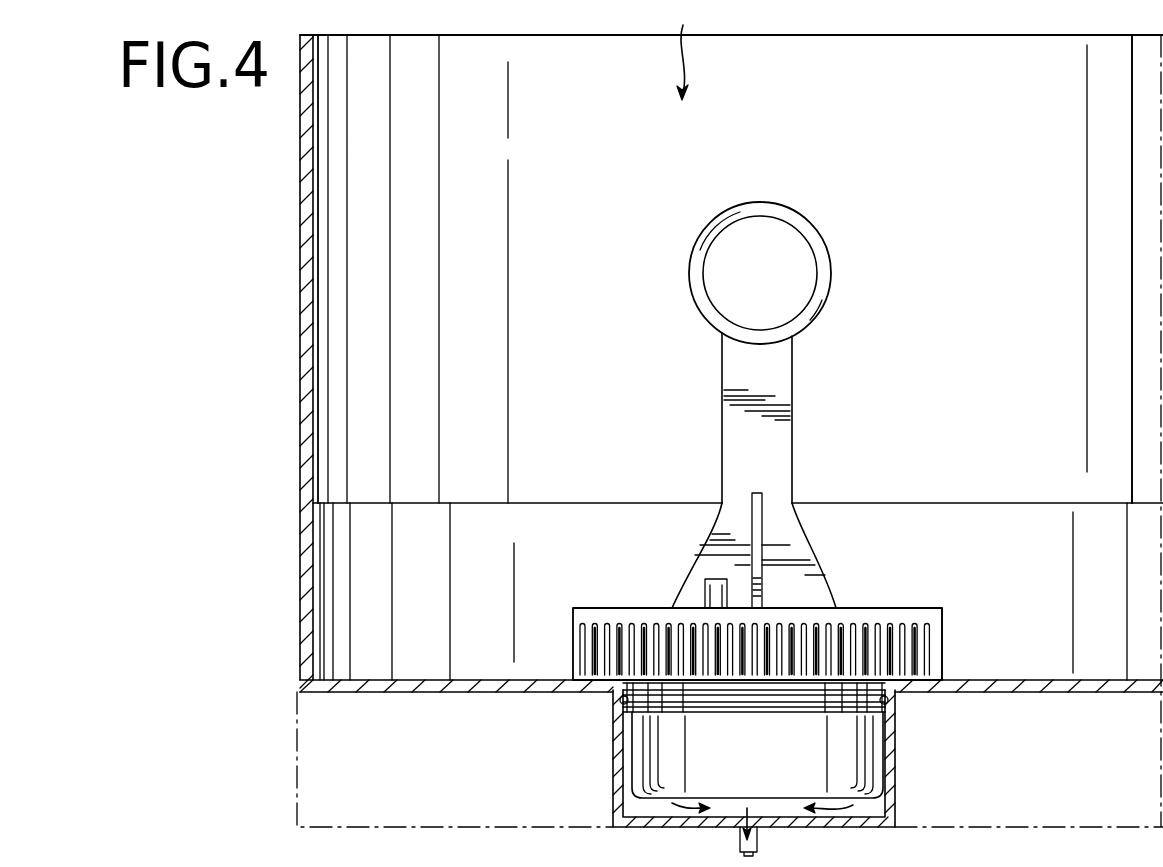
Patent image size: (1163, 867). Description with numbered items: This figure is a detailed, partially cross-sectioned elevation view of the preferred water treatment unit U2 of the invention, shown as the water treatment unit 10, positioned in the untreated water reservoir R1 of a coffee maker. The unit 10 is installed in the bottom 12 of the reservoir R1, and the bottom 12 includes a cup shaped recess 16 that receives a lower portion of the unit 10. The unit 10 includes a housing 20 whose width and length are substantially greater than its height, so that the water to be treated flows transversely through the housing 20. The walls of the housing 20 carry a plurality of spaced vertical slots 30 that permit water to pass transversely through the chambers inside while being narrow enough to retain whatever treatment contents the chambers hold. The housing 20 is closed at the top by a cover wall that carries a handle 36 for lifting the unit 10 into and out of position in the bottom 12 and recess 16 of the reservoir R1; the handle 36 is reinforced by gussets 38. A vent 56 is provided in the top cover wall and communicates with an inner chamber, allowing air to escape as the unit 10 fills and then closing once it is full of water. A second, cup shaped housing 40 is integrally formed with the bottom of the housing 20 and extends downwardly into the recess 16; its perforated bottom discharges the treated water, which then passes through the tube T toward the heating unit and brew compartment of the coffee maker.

The water treatment unit 10 is at (735, 586).
The bottom wall of the reservoir 12 is at (490, 680).
The cup shaped recess 16 is at (898, 806).
The housing 20 is at (568, 608).
The vertical slots 30 is at (840, 627).
The handle 36 is at (793, 375).
The gussets 38 is at (752, 520).
The second housing 40 is at (757, 762).
The vent 56 is at (702, 587).
The untreated water reservoir R1 is at (574, 215).
The water treatment unit U2 is at (943, 613).
The tube T is at (758, 838).